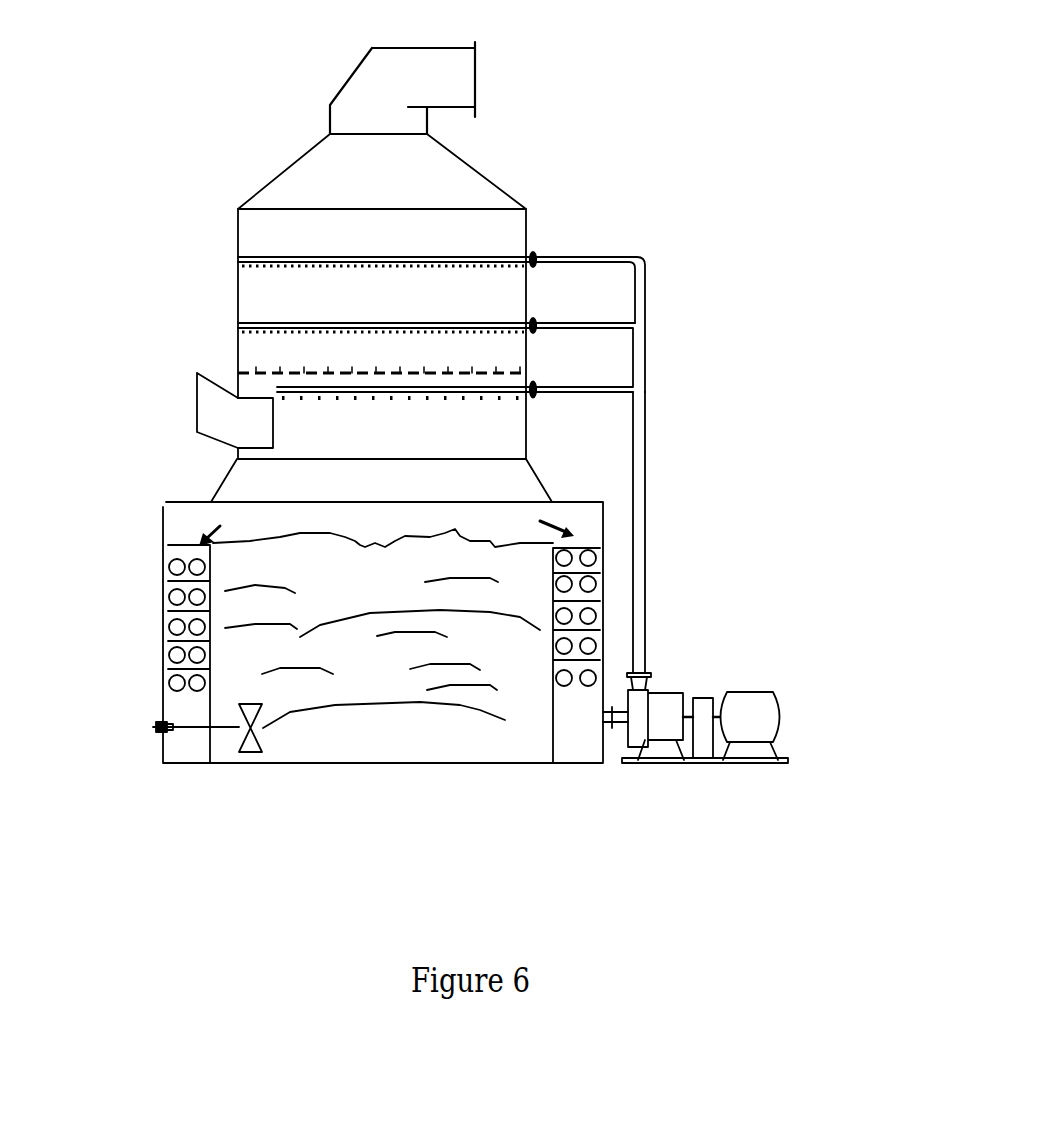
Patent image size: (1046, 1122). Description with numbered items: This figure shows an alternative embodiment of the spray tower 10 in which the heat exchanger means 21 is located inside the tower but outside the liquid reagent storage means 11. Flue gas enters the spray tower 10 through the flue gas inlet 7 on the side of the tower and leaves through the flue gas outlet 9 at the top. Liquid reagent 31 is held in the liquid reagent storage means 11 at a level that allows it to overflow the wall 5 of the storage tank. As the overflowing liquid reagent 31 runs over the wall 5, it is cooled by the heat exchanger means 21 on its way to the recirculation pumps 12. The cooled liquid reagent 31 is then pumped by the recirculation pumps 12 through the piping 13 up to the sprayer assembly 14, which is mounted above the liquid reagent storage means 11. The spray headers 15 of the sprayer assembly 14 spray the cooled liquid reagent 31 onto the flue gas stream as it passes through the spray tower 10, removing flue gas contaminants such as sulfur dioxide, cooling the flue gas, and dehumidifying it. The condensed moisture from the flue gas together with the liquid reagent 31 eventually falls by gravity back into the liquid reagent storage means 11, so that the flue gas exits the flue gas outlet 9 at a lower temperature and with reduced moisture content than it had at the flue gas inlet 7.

The spray tower 10 is at (138, 118).
The flue gas outlet 9 is at (498, 63).
The spray headers 15 is at (260, 265).
The sprayer assembly 14 is at (625, 242).
The piping 13 is at (667, 517).
The recirculation pump 12 is at (810, 730).
The flue gas inlet 7 is at (162, 400).
The wall 5 is at (201, 539).
The heat exchanger means 21 is at (172, 600).
The liquid reagent storage means 11 is at (557, 742).
The liquid reagent 31 is at (342, 740).